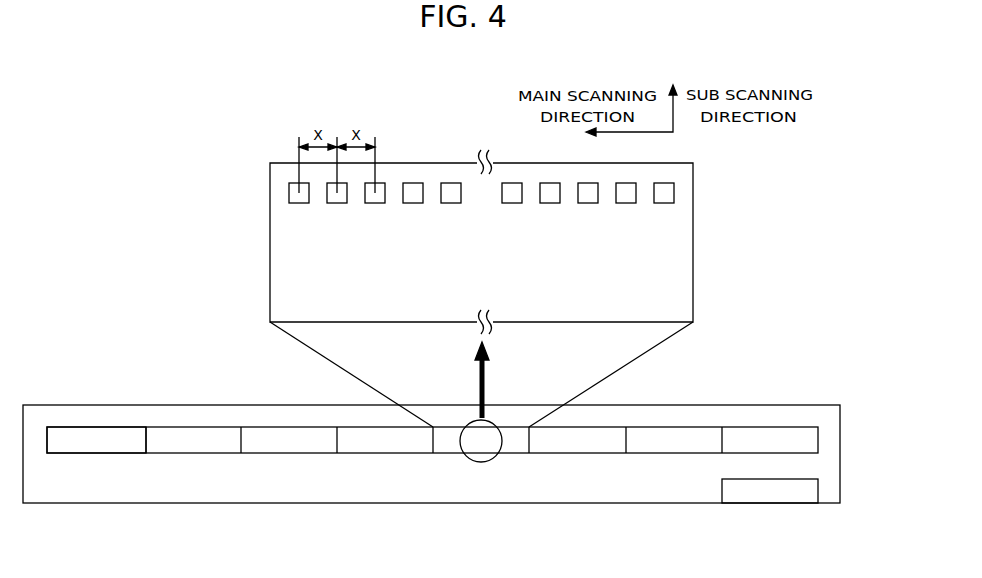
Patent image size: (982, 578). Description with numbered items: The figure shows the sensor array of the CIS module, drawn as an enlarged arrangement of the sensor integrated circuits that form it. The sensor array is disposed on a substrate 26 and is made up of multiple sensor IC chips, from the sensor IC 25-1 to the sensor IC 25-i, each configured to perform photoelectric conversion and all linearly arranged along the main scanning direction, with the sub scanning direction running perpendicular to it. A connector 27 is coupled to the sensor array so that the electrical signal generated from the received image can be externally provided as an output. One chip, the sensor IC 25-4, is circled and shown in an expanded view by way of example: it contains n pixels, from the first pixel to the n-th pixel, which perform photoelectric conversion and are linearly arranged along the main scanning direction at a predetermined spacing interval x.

The sensor IC 25-1 is at (802, 437).
The sensor IC 25-i is at (100, 440).
The sensor IC 25-4 is at (482, 445).
The substrate 26 is at (802, 465).
The connector 27 is at (802, 494).